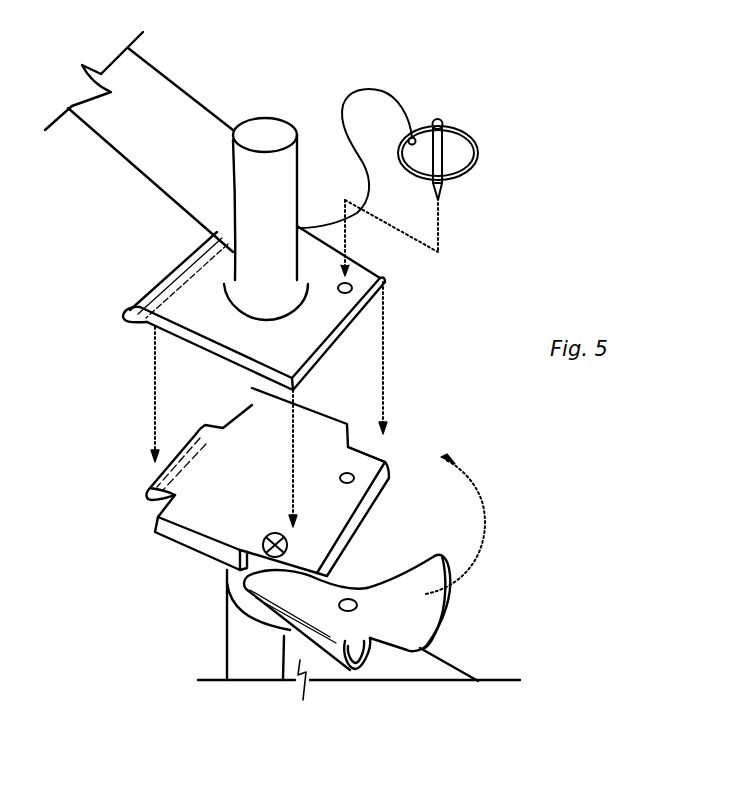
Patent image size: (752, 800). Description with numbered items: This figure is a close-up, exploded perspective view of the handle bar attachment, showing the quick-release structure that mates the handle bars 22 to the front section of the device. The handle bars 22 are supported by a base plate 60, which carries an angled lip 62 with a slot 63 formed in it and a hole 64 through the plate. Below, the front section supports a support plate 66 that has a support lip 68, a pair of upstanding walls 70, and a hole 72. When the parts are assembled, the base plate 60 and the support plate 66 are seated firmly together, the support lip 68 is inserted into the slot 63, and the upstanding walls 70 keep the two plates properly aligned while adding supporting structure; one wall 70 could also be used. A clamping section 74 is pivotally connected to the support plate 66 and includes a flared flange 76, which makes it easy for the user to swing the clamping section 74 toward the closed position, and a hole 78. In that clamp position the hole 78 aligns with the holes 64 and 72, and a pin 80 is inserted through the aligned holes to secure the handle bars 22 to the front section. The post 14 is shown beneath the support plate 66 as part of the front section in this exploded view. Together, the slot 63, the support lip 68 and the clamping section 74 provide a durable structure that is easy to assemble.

The post 14 is at (237, 638).
The handle bars 22 is at (167, 100).
The base plate 60 is at (192, 288).
The angled lip 62 is at (130, 321).
The slot 63 is at (192, 243).
The hole 64 is at (352, 283).
The support plate 66 is at (193, 508).
The support lip 68 is at (147, 490).
The upstanding walls 70 is at (183, 538).
The hole 72 is at (354, 477).
The clamping section 74 is at (317, 642).
The flange 76 is at (440, 622).
The hole 78 is at (352, 598).
The pin 80 is at (480, 160).